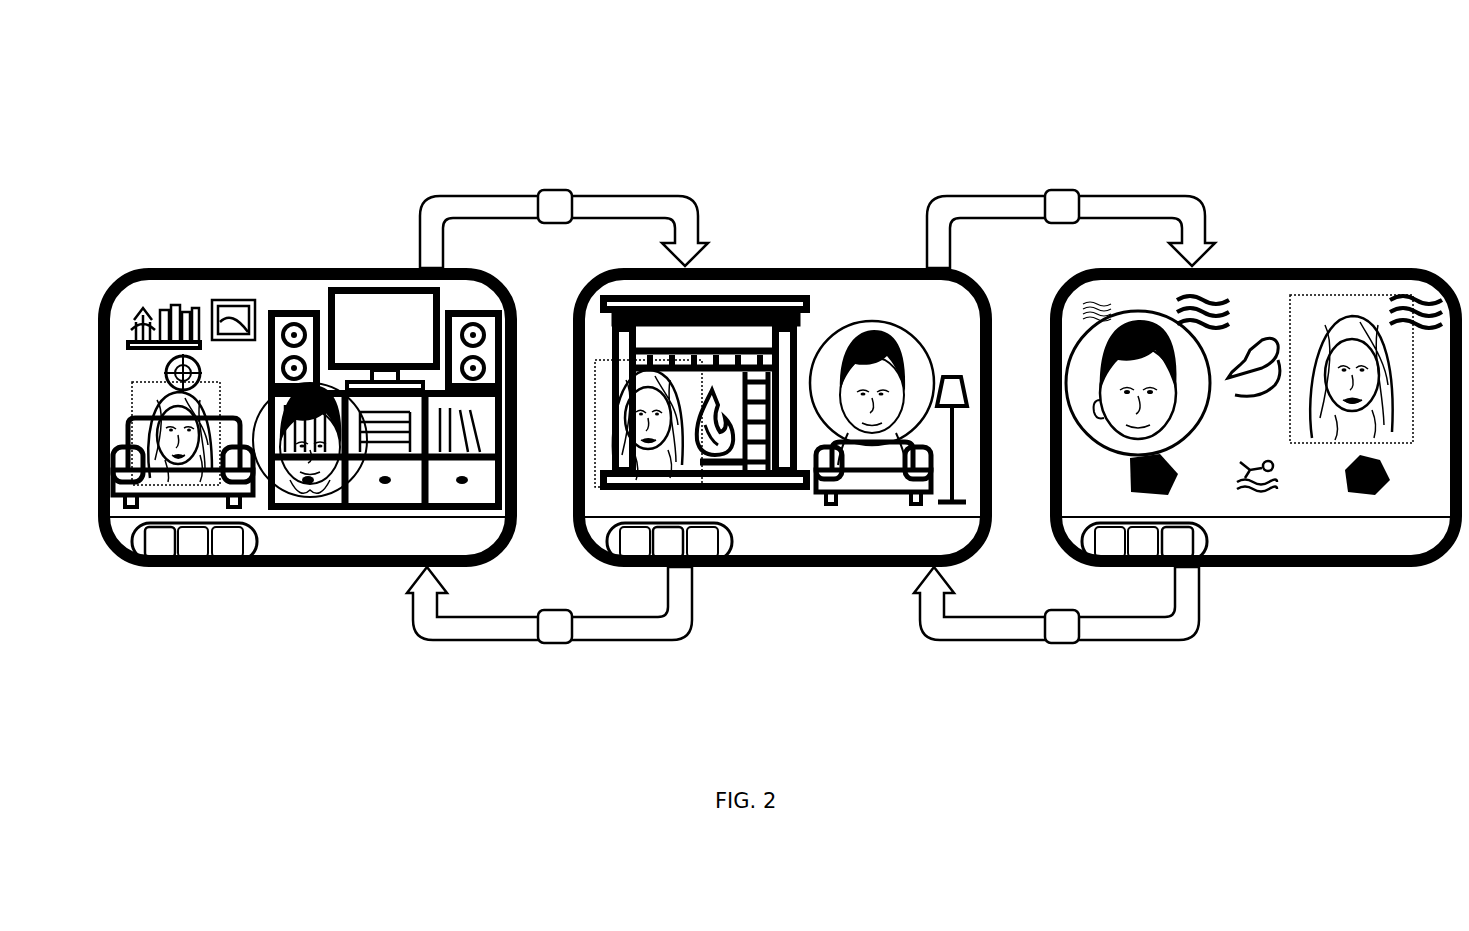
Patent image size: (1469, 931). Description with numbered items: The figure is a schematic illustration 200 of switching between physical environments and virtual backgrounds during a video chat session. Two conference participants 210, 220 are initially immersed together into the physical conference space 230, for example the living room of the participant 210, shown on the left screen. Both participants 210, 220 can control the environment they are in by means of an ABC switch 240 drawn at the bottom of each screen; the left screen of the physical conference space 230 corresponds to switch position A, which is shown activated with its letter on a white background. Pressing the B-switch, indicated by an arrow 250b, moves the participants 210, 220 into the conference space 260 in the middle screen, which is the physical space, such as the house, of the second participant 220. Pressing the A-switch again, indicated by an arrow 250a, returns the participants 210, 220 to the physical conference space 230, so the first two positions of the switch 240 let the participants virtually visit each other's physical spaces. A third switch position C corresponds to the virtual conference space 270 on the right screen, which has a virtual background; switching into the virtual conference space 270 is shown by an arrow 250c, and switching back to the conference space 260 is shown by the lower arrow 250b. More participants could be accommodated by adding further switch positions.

The schematic illustration 200 is at (1434, 124).
The conference participant 210 is at (225, 420).
The conference participant 220 is at (303, 497).
The physical conference space 230 is at (147, 370).
The ABC switch 240 is at (176, 565).
The arrow 250a is at (520, 645).
The arrow 250b is at (524, 195).
The arrow 250c is at (986, 195).
The conference space 260 is at (947, 324).
The virtual conference space 270 is at (1266, 427).